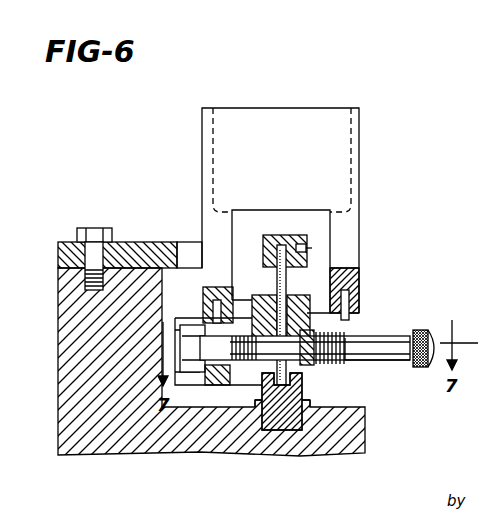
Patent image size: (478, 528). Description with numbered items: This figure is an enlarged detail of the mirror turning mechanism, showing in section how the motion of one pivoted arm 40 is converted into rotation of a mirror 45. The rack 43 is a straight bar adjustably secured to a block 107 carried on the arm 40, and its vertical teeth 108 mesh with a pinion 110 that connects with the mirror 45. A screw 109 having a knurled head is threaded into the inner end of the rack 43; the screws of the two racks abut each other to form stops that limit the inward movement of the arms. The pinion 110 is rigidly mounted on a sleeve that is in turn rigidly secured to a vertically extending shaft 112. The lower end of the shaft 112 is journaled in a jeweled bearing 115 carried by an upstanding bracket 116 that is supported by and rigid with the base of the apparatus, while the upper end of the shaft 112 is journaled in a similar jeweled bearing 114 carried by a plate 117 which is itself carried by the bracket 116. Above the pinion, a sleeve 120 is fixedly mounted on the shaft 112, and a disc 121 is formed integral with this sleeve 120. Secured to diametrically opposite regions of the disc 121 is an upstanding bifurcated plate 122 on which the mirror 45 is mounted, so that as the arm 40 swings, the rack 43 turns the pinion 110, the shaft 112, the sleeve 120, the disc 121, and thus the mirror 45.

The mirror 45 is at (350, 138).
The bifurcated plate 122 is at (337, 192).
The plate 117 is at (163, 224).
The bracket 116 is at (67, 325).
The jeweled bearing 114 is at (282, 247).
The shaft 112 is at (287, 282).
The sleeve 120 is at (290, 298).
The block 107 is at (192, 318).
The disc 121 is at (328, 313).
The pinion 110 is at (330, 336).
The screw 109 is at (424, 330).
The rack 43 is at (388, 360).
The vertical teeth 108 is at (360, 362).
The jeweled bearing 115 is at (302, 393).
The arm 40 is at (210, 386).